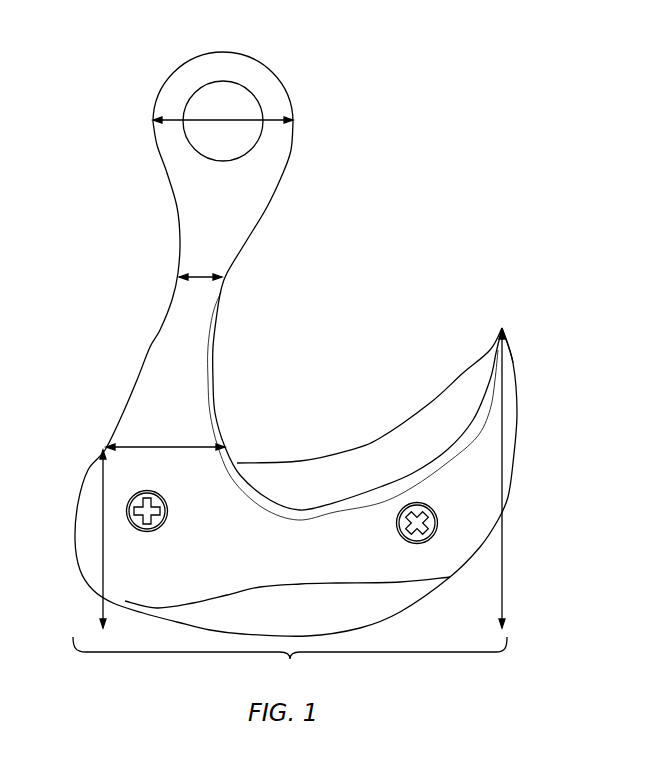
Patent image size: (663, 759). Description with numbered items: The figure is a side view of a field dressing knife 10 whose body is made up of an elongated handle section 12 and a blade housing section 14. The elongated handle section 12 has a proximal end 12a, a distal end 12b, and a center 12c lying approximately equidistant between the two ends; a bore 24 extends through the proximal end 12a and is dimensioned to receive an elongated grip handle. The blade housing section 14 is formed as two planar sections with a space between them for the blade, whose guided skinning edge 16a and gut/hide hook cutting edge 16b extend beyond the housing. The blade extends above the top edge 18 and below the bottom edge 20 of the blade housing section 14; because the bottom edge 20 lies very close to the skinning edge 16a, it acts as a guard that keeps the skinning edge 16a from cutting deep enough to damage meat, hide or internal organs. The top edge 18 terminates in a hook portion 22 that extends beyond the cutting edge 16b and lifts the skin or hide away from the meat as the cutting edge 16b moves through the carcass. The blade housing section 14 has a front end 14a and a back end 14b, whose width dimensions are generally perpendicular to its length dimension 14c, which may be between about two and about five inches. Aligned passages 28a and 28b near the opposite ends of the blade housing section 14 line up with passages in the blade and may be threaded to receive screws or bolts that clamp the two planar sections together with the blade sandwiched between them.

The field dressing knife 10 is at (455, 180).
The elongated handle section 12 is at (70, 47).
The proximal end 12a is at (168, 118).
The distal end 12b is at (122, 446).
The center 12c is at (190, 276).
The blade housing section 14 is at (70, 466).
The front end 14a is at (503, 575).
The back end 14b is at (103, 572).
The length dimension 14c is at (290, 662).
The guided skinning edge 16a is at (317, 622).
The gut/hide hook cutting edge 16b is at (338, 467).
The top edge 18 is at (320, 510).
The bottom edge 20 is at (285, 585).
The hook portion 22 is at (510, 358).
The bore 24 is at (212, 117).
The aligned passage 28a is at (164, 509).
The aligned passage 28b is at (436, 514).